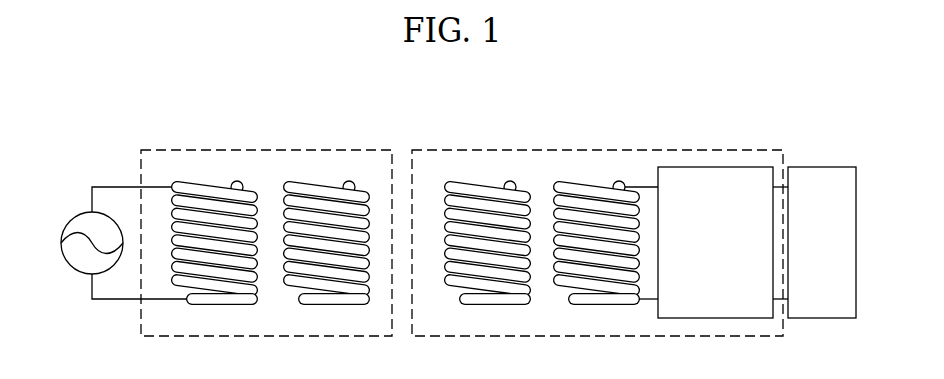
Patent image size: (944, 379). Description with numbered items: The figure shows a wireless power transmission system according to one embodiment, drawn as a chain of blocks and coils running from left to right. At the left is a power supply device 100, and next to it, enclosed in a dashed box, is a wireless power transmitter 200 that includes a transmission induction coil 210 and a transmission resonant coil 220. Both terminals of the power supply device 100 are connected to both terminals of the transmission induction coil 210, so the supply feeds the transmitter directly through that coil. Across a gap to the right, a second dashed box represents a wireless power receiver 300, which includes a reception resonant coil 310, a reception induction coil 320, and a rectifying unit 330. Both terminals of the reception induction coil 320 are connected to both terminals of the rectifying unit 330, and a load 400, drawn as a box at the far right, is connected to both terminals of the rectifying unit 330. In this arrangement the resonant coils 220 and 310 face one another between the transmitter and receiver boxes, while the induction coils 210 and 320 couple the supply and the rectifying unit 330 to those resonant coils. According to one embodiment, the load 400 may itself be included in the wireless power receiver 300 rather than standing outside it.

The power supply device 100 is at (68, 213).
The wireless power transmitter 200 is at (163, 149).
The transmission induction coil 210 is at (228, 197).
The transmission resonant coil 220 is at (323, 197).
The wireless power receiver 300 is at (535, 148).
The reception resonant coil 310 is at (480, 192).
The reception induction coil 320 is at (603, 192).
The rectifying unit 330 is at (712, 165).
The load side 400 is at (820, 165).